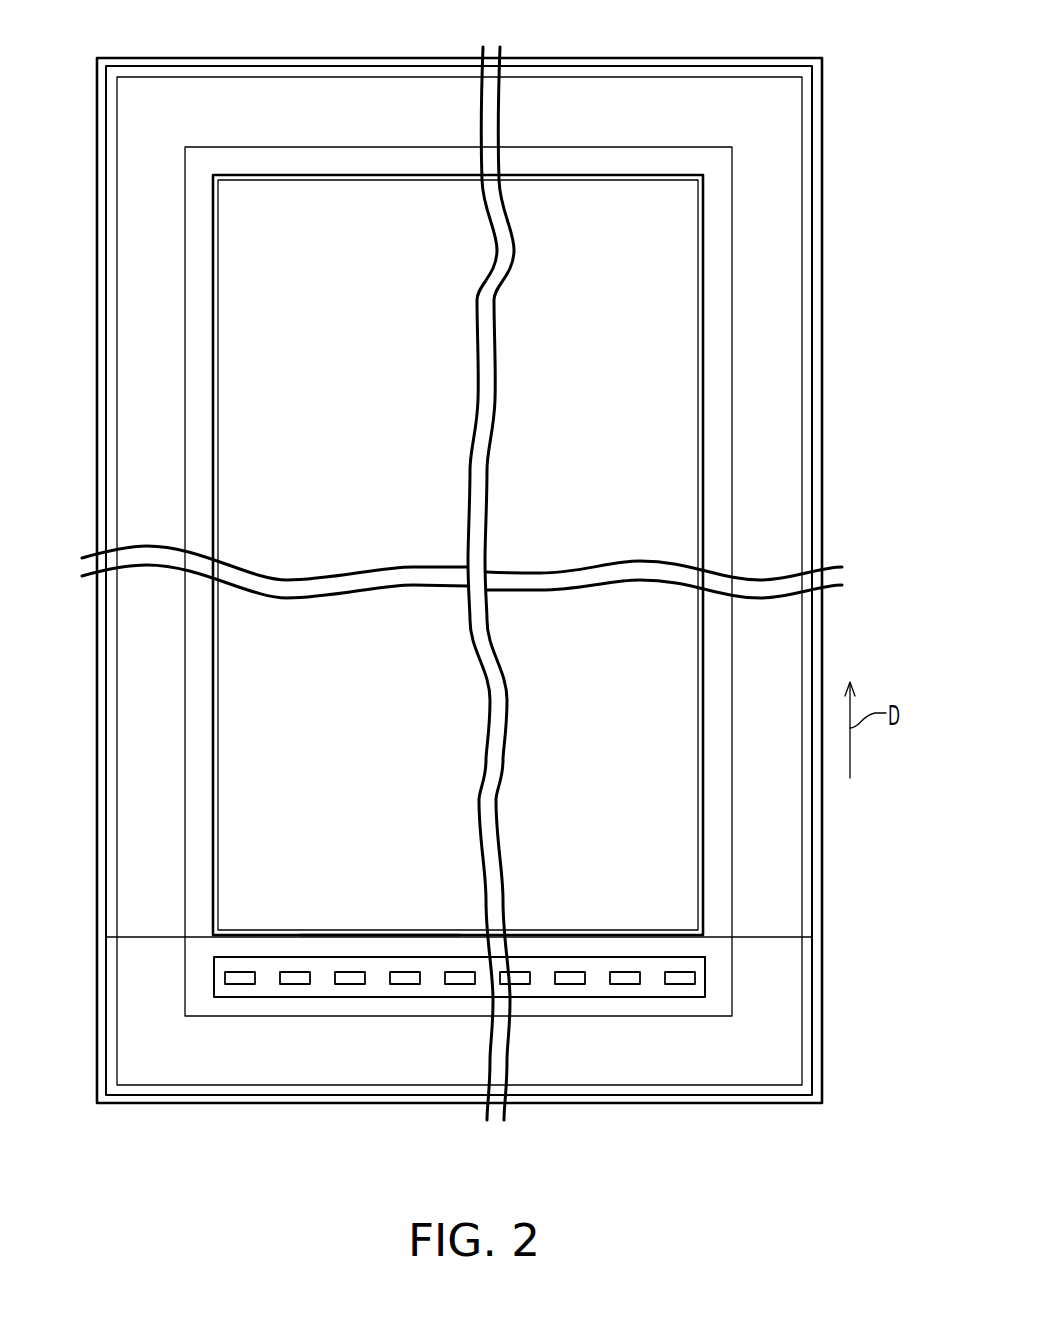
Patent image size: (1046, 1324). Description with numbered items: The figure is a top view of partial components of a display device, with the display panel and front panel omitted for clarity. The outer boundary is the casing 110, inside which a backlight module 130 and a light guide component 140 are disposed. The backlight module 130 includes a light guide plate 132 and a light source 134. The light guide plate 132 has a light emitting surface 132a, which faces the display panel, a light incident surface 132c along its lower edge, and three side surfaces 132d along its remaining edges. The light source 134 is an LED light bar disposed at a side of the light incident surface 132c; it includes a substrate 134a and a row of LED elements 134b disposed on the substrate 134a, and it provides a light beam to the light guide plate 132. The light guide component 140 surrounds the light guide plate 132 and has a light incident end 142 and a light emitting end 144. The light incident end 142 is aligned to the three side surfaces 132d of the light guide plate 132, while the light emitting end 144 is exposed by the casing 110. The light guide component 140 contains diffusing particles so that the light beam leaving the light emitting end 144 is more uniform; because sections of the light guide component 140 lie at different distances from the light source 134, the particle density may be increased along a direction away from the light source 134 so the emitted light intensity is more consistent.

The casing 110 is at (820, 181).
The backlight module 130 is at (565, 669).
The light guide plate 132 is at (680, 873).
The light source 134 is at (539, 1030).
The substrate 134a is at (653, 983).
The LED elements 134b is at (623, 984).
The light emitting surface 132a is at (263, 876).
The light incident surface 132c is at (382, 940).
The side surface 132d is at (698, 345).
The light guide component 140 is at (773, 250).
The light incident end 142 is at (700, 470).
The light emitting end 144 is at (108, 730).